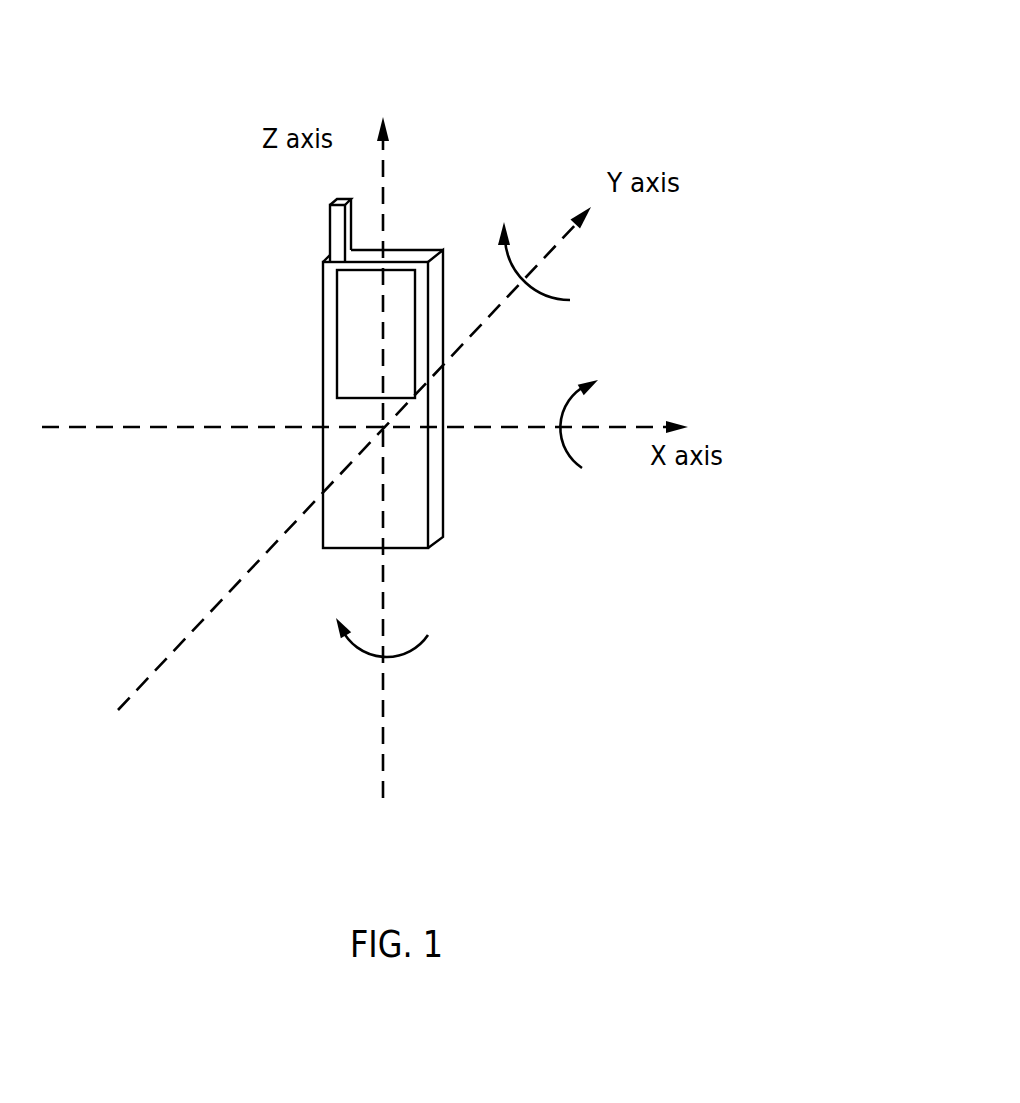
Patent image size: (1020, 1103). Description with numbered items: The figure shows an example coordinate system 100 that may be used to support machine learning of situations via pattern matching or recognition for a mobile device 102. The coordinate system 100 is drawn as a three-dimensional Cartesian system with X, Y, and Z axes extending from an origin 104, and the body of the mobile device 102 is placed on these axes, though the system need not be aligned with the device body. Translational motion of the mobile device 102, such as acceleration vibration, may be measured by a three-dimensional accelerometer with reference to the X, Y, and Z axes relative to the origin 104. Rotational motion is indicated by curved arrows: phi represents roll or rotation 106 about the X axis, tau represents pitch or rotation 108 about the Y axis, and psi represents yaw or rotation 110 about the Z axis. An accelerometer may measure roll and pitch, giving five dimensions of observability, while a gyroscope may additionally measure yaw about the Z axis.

The example coordinate system 100 is at (752, 57).
The mobile device 102 is at (322, 310).
The origin 104 is at (385, 428).
The roll or rotation about X axis 106 is at (570, 412).
The pitch or rotation about Y axis 108 is at (503, 263).
The yaw or rotation about Z axis 110 is at (407, 652).